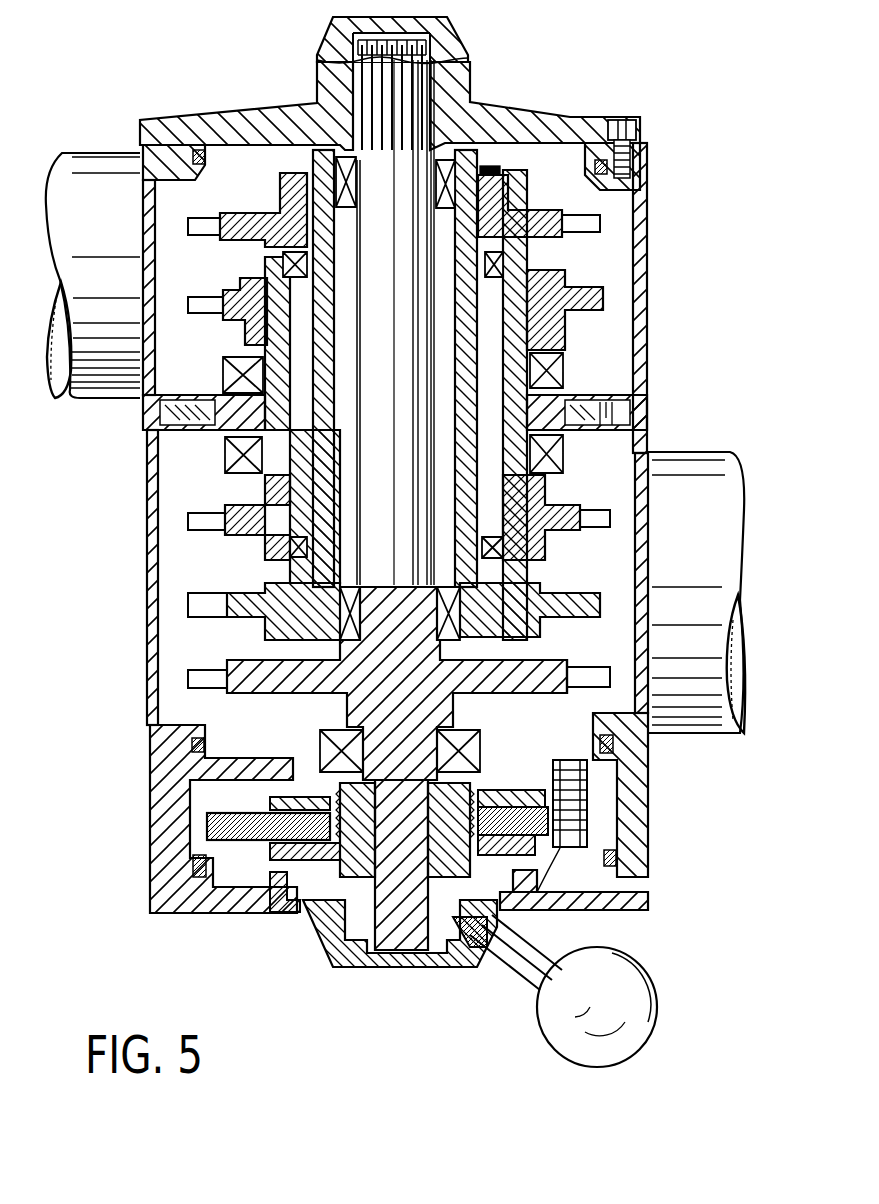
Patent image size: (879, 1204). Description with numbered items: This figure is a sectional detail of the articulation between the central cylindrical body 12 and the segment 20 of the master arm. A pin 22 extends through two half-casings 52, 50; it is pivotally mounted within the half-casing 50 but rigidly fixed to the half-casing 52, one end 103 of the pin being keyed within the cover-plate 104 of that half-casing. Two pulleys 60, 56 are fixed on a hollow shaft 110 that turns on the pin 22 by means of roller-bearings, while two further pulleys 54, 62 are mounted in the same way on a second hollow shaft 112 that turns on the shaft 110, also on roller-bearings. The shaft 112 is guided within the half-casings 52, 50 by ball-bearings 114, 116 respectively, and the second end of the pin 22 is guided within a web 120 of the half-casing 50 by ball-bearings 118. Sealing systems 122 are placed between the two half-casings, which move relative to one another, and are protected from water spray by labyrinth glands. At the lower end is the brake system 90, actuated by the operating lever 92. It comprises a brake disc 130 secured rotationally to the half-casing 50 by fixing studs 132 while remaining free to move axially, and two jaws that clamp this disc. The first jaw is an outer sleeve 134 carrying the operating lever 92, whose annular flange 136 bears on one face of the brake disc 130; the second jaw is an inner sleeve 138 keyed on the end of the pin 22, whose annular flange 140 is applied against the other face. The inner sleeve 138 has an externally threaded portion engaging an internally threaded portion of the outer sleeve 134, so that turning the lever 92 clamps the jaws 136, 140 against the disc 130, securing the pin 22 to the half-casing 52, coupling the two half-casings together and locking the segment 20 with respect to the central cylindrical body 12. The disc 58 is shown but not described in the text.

The central cylindrical body 12 is at (698, 705).
The segment of the master arm 20 is at (98, 195).
The pin 22 is at (405, 236).
The half-casing 50 is at (662, 864).
The half-casing 52 is at (650, 335).
The pulley 54 is at (592, 520).
The pulley 56 is at (598, 586).
The disc 58 is at (555, 668).
The pulley 60 is at (575, 216).
The pulley 62 is at (595, 300).
The brake system 90 is at (426, 986).
The operating lever 92 is at (625, 1037).
The end of the pin 103 is at (350, 70).
The cover-plate 104 is at (520, 118).
The hollow shaft 110 is at (470, 470).
The second hollow shaft 112 is at (513, 413).
The ball-bearings 114 is at (245, 372).
The ball-bearings 116 is at (240, 473).
The ball-bearings 118 is at (332, 742).
The web 120 is at (250, 762).
The sealing systems 122 is at (203, 447).
The brake disc 130 is at (207, 834).
The fixing studs 132 is at (542, 760).
The outer sleeve 134 is at (330, 960).
The annular flange 136 is at (551, 868).
The inner sleeve 138 is at (360, 858).
The annular flange 140 is at (273, 798).